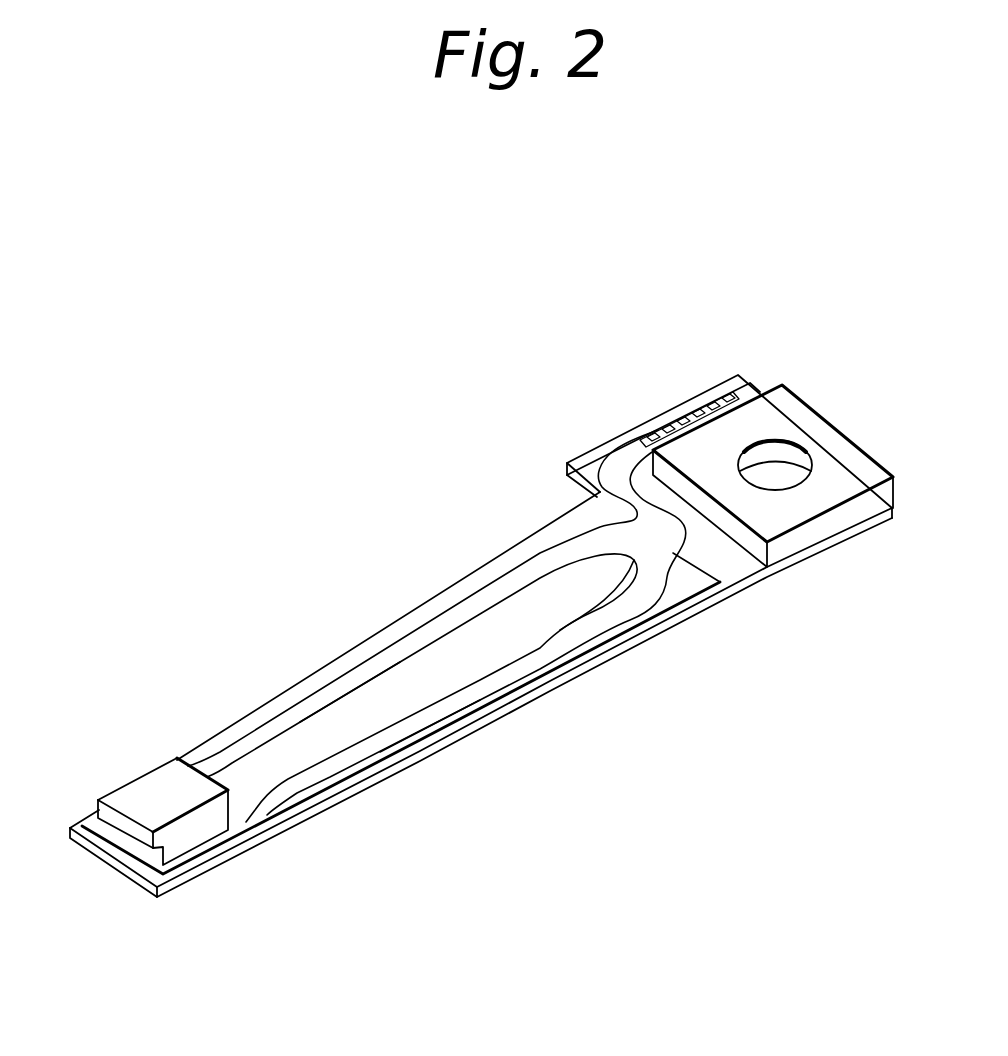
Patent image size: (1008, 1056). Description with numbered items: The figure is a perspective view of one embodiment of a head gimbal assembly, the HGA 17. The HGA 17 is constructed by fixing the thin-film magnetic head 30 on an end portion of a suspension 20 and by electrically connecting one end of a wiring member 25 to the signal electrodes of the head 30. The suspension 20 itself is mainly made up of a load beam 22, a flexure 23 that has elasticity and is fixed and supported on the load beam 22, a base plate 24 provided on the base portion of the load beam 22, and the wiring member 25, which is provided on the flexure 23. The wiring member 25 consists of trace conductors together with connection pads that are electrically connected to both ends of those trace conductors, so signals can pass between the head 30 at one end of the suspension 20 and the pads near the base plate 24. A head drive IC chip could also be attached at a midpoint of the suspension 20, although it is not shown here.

The HGA 17 is at (582, 372).
The suspension 20 is at (517, 545).
The load beam 22 is at (697, 583).
The flexure 23 is at (588, 593).
The base plate 24 is at (838, 475).
The wiring member 25 is at (428, 722).
The thin-film magnetic head 30 is at (157, 797).